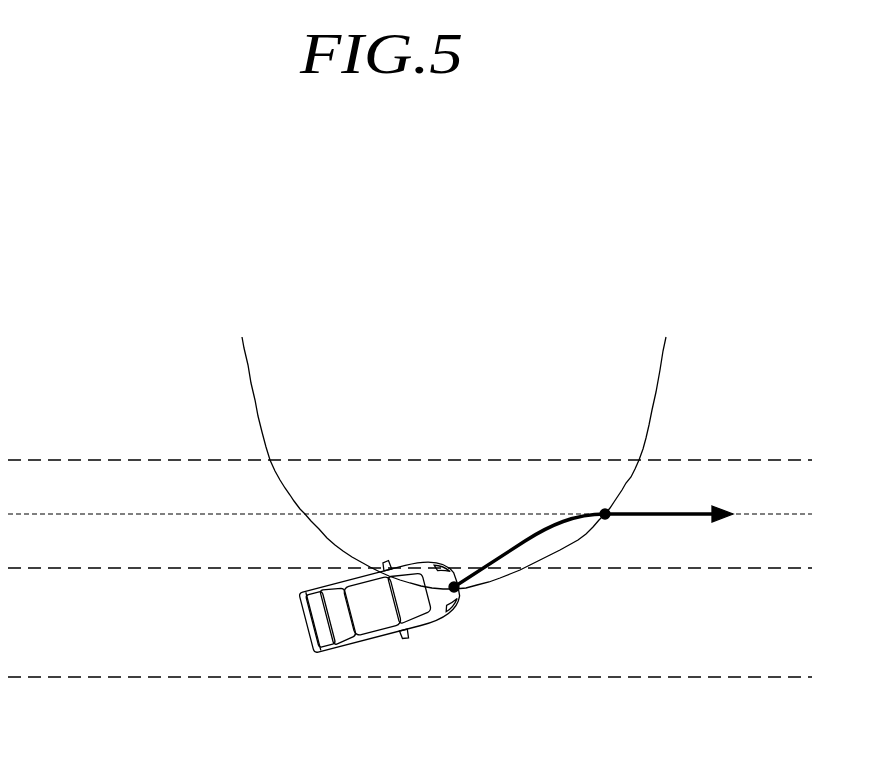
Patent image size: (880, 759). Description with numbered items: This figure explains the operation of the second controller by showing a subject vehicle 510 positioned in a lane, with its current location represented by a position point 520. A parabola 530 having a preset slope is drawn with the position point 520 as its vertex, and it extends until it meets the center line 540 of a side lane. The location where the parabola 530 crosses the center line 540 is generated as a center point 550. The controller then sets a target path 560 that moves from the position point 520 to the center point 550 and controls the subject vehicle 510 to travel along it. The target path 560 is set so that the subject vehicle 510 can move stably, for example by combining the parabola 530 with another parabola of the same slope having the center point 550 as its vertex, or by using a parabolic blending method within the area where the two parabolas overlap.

The subject vehicle 510 is at (457, 613).
The position point 520 is at (454, 587).
The parabola 530 is at (666, 353).
The center line 540 is at (102, 514).
The center point 550 is at (605, 514).
The target path 560 is at (693, 512).